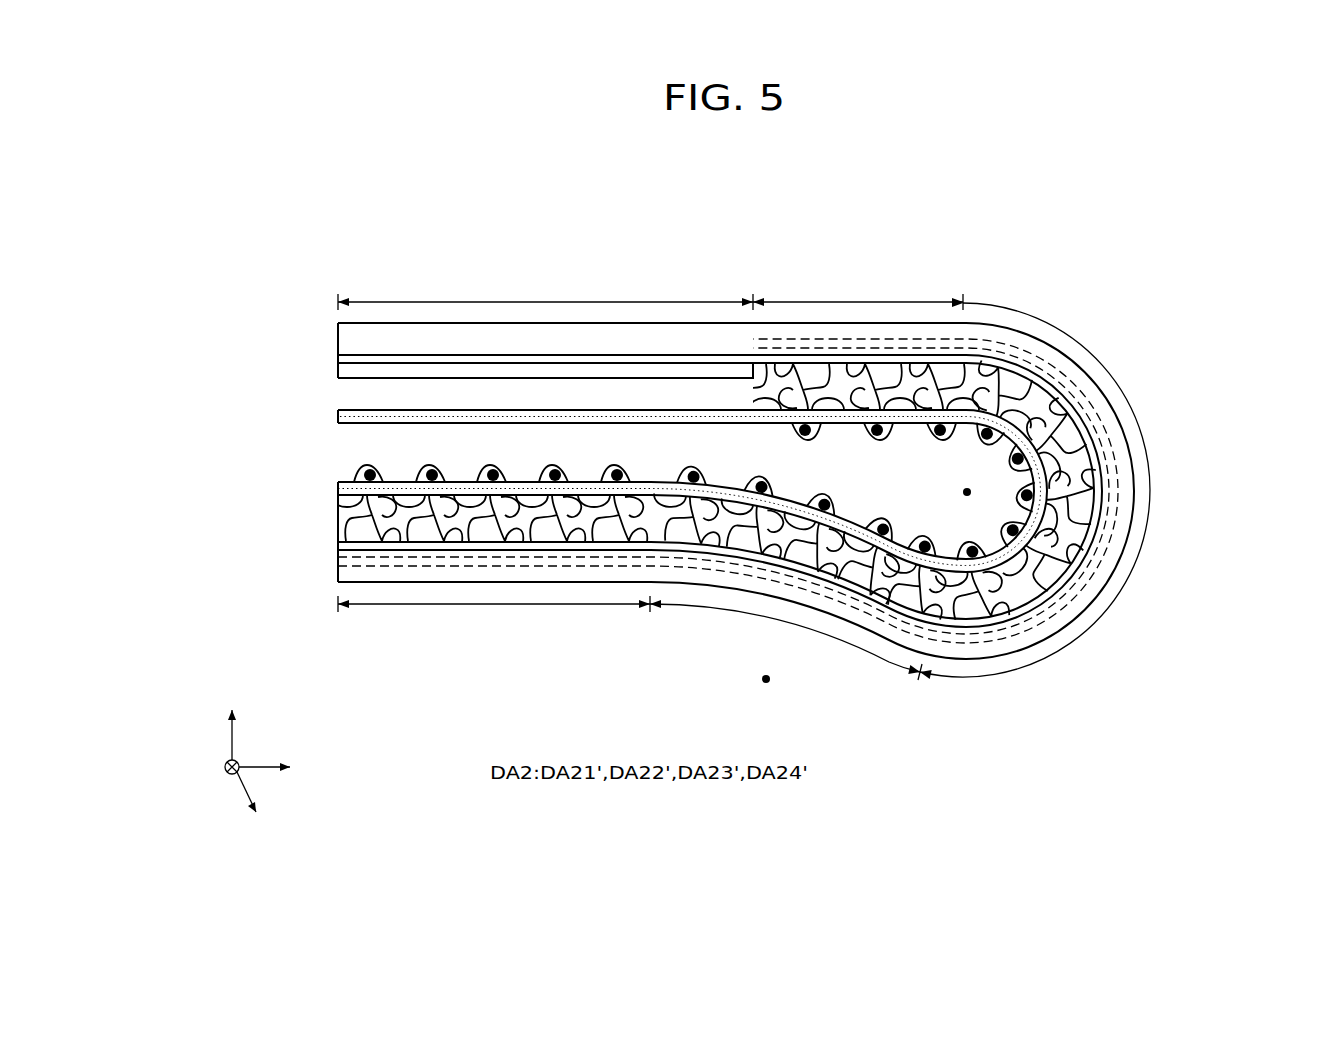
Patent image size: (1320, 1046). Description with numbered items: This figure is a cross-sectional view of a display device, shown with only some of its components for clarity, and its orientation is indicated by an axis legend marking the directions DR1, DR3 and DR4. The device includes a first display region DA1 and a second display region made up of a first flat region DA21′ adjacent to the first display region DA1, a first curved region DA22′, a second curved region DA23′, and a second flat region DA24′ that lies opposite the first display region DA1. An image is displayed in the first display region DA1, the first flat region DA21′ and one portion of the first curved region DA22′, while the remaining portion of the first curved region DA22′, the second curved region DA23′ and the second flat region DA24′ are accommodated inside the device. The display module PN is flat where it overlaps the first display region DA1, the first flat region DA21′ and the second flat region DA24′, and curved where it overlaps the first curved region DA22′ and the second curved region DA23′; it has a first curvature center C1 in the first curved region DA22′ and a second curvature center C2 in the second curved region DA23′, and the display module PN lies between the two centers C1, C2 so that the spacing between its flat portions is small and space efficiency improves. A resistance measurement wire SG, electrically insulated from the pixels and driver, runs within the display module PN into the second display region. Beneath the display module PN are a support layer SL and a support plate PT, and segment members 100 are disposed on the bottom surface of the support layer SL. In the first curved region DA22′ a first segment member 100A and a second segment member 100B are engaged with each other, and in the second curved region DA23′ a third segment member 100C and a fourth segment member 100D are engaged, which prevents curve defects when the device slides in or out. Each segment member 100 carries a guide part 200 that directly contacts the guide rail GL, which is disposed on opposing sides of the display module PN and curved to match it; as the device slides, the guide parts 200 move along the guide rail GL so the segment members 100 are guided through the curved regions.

The segment member 100 is at (787, 372).
The first segment member 100A is at (1007, 592).
The second segment member 100B is at (1052, 562).
The third segment member 100C is at (810, 567).
The fourth segment member 100D is at (860, 592).
The guide part 200 is at (812, 435).
The display module PN is at (338, 338).
The support layer SL is at (338, 356).
The support plate PT is at (338, 372).
The guide rail GL is at (338, 416).
The resistance measurement wire SG is at (986, 347).
The first curvature center C1 is at (967, 479).
The second curvature center C2 is at (766, 691).
The first display region DA1 is at (545, 295).
The first flat region DA21′ is at (858, 295).
The first curved region DA22′ is at (1064, 489).
The second curved region DA23′ is at (785, 637).
The second flat region DA24′ is at (494, 613).
The first direction DR1 is at (262, 767).
The third direction DR3 is at (232, 721).
The fourth direction DR4 is at (266, 809).